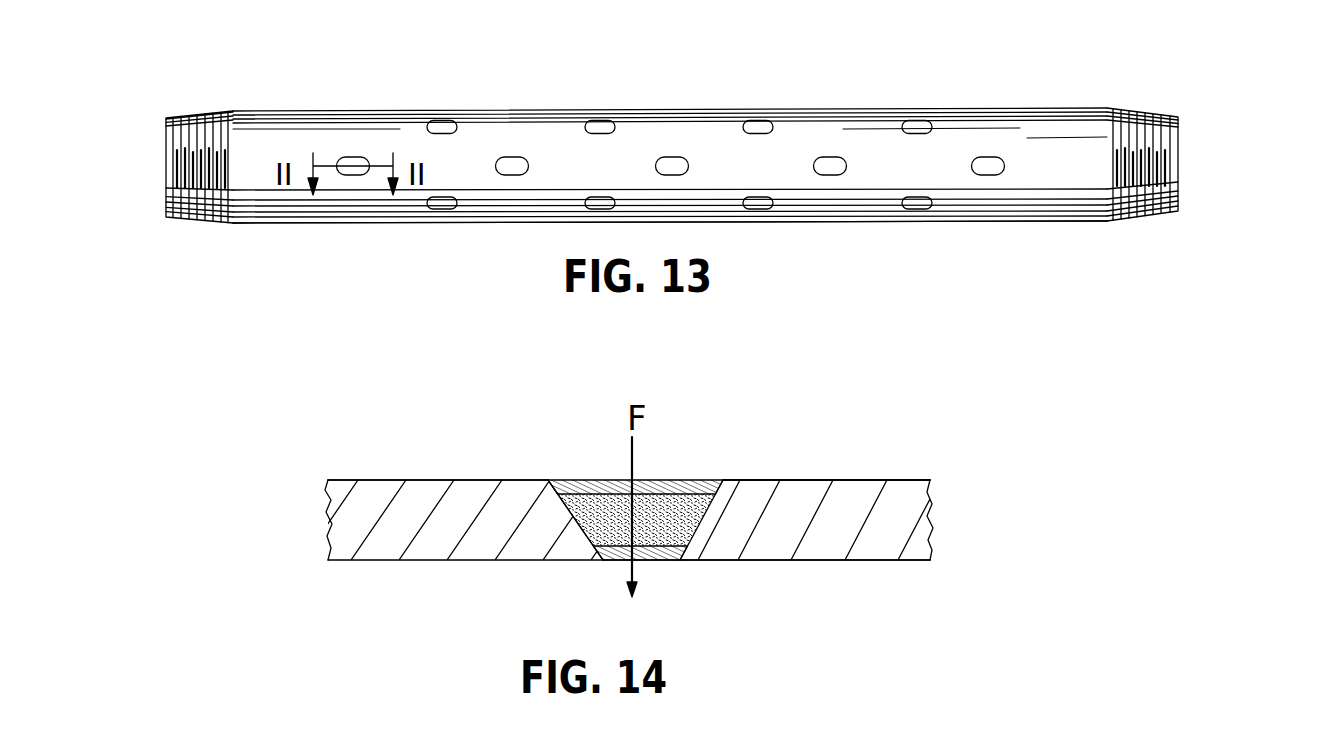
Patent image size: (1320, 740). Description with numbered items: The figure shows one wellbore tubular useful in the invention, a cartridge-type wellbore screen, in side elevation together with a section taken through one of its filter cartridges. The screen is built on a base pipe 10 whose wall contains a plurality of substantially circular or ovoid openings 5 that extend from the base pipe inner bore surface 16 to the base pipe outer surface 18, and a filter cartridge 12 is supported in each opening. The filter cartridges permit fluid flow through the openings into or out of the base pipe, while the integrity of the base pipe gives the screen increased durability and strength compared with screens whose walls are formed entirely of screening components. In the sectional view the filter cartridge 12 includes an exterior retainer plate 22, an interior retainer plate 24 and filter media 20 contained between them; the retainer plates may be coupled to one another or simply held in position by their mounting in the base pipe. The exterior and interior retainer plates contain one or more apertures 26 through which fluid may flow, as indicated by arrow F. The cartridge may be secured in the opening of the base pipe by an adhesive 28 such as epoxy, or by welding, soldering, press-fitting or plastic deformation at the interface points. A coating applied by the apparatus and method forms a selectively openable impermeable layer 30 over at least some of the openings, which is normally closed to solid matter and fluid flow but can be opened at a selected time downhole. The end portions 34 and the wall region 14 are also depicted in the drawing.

In FIG. 13, the base pipe 10 is at (1040, 104).
In FIG. 14, the base pipe 10 is at (340, 563).
In FIG. 13, the filter cartridge 12 is at (353, 163).
In FIG. 14, the filter cartridge 12 is at (571, 466).
In FIG. 13, the openings 5 is at (745, 127).
In FIG. 14, the wall 14 is at (712, 477).
In FIG. 14, the base pipe inner bore surface 16 is at (907, 563).
In FIG. 13, the base pipe outer surface 18 is at (1037, 223).
In FIG. 14, the base pipe outer surface 18 is at (903, 477).
In FIG. 14, the filter media 20 is at (570, 523).
In FIG. 14, the exterior retainer plate 22 is at (603, 487).
In FIG. 14, the interior retainer plate 24 is at (643, 563).
In FIG. 14, the apertures 26 is at (680, 488).
In FIG. 14, the adhesive 28 is at (548, 483).
In FIG. 14, the impermeable layer 30 is at (877, 563).
In FIG. 13, the end portion 34 is at (197, 125).